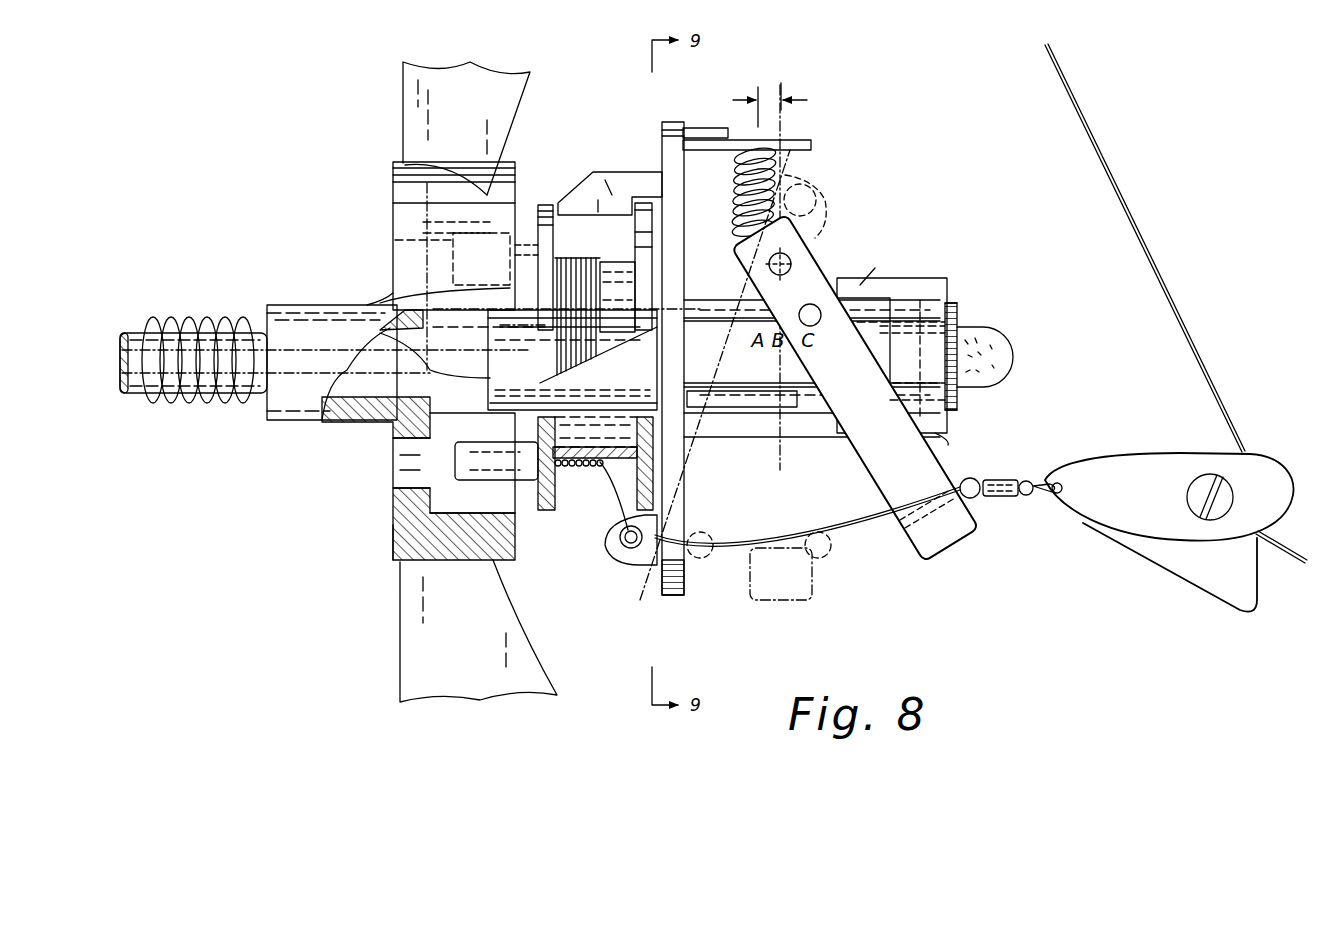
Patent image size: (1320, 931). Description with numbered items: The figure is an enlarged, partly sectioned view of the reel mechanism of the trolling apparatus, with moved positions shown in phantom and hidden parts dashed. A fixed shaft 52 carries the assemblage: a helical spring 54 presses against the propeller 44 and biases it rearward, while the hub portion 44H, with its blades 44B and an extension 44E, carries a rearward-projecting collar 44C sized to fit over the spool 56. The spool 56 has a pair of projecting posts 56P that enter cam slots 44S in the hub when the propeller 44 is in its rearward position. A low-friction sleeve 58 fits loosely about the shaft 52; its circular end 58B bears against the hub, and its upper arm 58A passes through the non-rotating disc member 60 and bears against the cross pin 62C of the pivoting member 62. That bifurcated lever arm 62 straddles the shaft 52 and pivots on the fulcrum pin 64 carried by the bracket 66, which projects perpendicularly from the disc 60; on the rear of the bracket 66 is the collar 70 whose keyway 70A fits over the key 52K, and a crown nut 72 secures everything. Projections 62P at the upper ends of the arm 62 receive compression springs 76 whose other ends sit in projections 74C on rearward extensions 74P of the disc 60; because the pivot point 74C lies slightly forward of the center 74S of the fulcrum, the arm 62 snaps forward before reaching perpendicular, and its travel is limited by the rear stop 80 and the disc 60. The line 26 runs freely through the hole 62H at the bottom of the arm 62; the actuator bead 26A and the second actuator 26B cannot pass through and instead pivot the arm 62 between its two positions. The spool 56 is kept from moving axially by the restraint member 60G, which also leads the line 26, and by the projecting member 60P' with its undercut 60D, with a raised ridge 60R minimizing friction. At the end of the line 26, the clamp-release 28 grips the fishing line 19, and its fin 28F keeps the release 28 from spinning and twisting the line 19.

The fishing line 19 is at (1166, 290).
The line 26 is at (842, 545).
The actuator bead 26A is at (595, 258).
The second actuator 26B is at (978, 497).
The clamp-release 28 is at (1112, 505).
The fin 28F is at (1205, 568).
The propeller 44 is at (288, 422).
The propeller blades 44B is at (412, 93).
The collar 44C is at (518, 540).
The hub extension collar 44E is at (300, 305).
The hub portion 44H is at (390, 535).
The cam slots 44S is at (393, 240).
The fixed shaft 52 is at (147, 385).
The key 52K is at (960, 402).
The helical spring 54 is at (210, 325).
The spool 56 is at (560, 480).
The projecting posts 56P is at (525, 240).
The sleeve 58 is at (520, 383).
The arm 58A is at (703, 313).
The circular end 58B is at (392, 325).
The disc member 60 is at (670, 120).
The undercut 60D is at (640, 195).
The restraint member 60G is at (620, 550).
The projecting member 60P' is at (610, 169).
The raised ridge 60R is at (680, 430).
The pivoting member 62 is at (893, 475).
The cross pin 62C is at (875, 270).
The hole 62H is at (915, 525).
The projections 62P is at (815, 210).
The pin 64 is at (792, 266).
The bracket 66 is at (925, 277).
The collar 70 is at (950, 405).
The keyway 70A is at (955, 312).
The crown nut 72 is at (1005, 350).
The projections 74C is at (790, 170).
The rearward extensions 74P is at (805, 140).
The center 74S is at (775, 103).
The compression springs 76 is at (805, 188).
The rear stop 80 is at (942, 437).